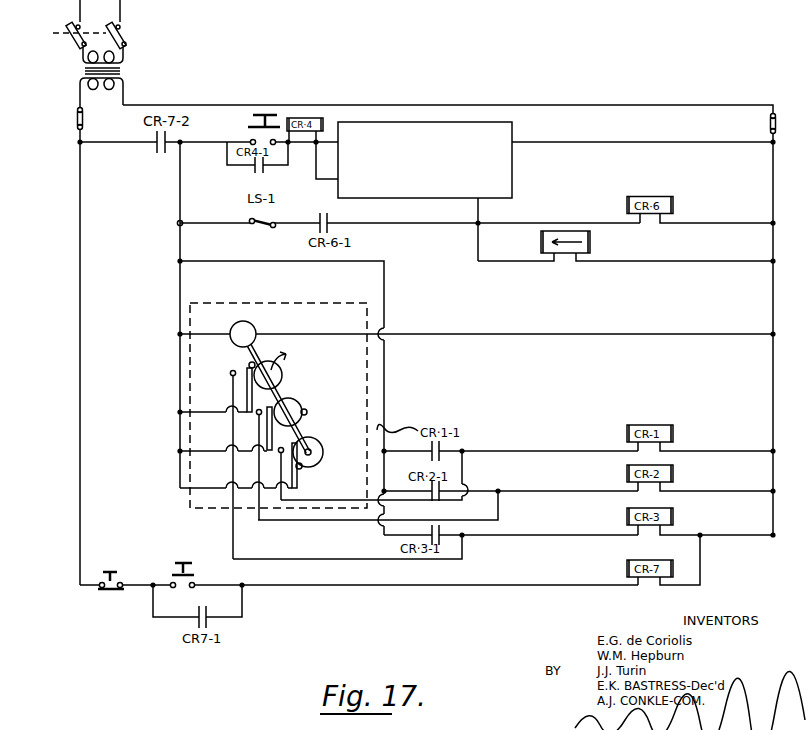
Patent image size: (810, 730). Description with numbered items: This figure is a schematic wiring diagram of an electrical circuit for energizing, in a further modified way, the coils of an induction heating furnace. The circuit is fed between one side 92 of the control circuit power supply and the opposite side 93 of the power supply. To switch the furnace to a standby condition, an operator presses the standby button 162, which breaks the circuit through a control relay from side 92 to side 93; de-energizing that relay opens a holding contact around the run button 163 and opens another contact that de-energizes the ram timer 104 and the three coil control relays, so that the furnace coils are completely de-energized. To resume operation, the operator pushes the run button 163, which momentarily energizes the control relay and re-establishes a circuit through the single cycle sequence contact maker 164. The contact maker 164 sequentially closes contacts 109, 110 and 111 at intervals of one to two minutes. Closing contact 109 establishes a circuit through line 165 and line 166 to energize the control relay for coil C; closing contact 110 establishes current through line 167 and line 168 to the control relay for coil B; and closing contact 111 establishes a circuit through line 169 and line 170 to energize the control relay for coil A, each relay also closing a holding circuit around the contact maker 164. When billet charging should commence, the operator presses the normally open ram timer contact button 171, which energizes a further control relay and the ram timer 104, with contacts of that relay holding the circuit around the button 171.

The side of the control circuit power supply 92 is at (81, 434).
The opposite side of the power supply 93 is at (773, 388).
The ram timer 104 is at (512, 134).
The contact 109 is at (230, 375).
The contact 110 is at (256, 414).
The contact 111 is at (278, 452).
The standby button 162 is at (130, 572).
The run button 163 is at (207, 581).
The single cycle sequence contact maker 164 is at (367, 396).
The line 165 is at (343, 560).
The line 166 is at (553, 537).
The line 167 is at (298, 521).
The line 168 is at (553, 493).
The line 169 is at (418, 501).
The line 170 is at (535, 451).
The ram timer contact button 171 is at (250, 120).